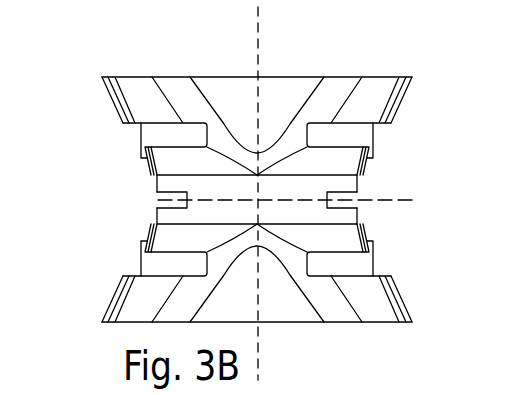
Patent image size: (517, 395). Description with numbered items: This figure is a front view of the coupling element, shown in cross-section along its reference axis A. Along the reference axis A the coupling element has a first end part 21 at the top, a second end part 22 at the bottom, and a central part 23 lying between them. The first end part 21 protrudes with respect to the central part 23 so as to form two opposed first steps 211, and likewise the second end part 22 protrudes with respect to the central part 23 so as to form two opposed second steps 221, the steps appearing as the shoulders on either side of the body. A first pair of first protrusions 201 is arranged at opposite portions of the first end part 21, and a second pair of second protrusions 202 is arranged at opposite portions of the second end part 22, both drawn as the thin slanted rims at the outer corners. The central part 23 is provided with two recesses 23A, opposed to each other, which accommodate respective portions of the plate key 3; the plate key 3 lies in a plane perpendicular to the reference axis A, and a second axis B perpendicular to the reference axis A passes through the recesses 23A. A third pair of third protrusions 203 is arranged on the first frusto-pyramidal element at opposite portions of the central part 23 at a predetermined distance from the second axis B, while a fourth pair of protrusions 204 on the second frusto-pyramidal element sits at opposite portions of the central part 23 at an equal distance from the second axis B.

The first end part 21 is at (238, 120).
The second end part 22 is at (239, 297).
The central part 23 is at (252, 204).
The first protrusions 201 is at (117, 98).
The second protrusions 202 is at (113, 301).
The first steps 211 is at (257, 135).
The second steps 221 is at (130, 278).
The third protrusions 203 is at (148, 168).
The fourth protrusions 204 is at (270, 245).
The plate key 3 is at (359, 203).
The recesses 23A is at (143, 203).
The reference axis A is at (268, 193).
The second axis B is at (296, 199).